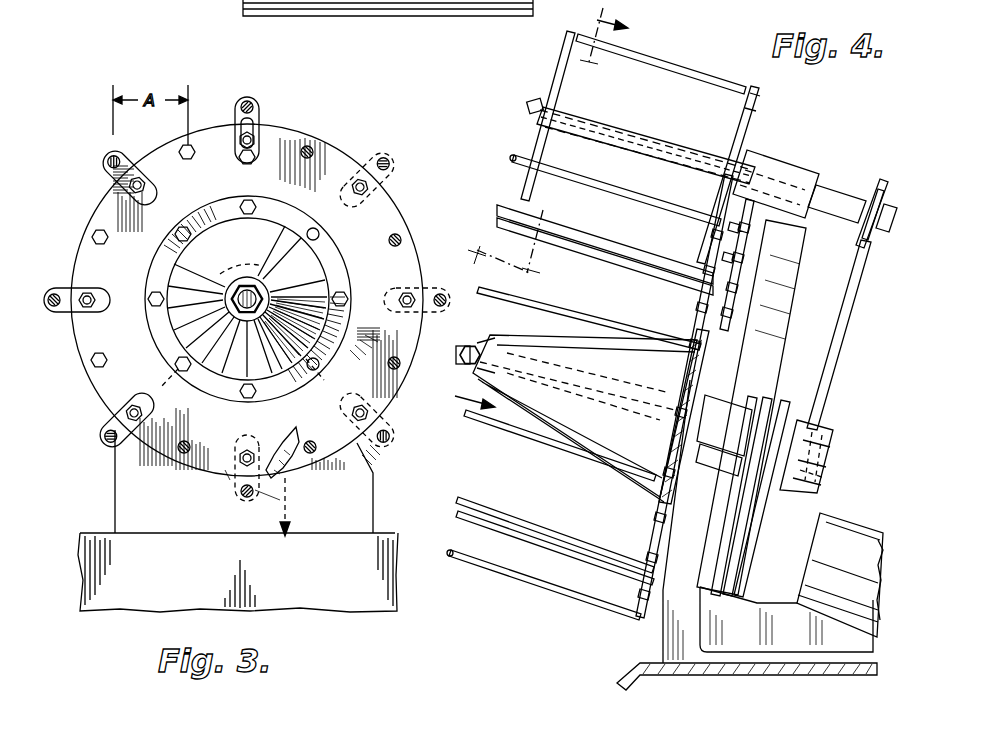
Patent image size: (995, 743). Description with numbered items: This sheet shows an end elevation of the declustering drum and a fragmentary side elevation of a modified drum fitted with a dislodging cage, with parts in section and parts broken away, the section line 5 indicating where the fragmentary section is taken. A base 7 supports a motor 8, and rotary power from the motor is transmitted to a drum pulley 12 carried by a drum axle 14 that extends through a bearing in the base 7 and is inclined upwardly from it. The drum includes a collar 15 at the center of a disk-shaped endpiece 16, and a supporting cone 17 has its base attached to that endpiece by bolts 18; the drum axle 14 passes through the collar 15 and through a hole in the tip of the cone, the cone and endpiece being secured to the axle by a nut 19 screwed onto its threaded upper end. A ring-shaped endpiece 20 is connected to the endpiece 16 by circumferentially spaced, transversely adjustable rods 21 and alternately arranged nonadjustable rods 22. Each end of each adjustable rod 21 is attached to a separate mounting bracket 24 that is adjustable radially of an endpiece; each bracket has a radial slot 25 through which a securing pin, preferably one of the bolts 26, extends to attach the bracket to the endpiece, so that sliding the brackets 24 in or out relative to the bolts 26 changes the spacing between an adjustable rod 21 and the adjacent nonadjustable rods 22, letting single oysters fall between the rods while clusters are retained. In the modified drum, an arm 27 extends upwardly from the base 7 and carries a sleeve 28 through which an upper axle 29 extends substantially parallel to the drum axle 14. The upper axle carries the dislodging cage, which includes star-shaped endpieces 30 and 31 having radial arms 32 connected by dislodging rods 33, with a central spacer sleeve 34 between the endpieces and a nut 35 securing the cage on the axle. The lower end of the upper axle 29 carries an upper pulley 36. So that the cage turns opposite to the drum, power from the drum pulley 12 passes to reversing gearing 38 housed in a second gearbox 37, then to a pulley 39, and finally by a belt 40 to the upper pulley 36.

In FIG. 4, the section line 5- 5 is at (532, 207).
In FIG. 4, the base 7 is at (662, 625).
In FIG. 4, the motor 8 is at (840, 575).
In FIG. 4, the drum pulley 12 is at (780, 405).
In FIG. 3, the drum axle 14 is at (238, 296).
In FIG. 4, the drum axle 14 is at (463, 346).
In FIG. 4, the collar 15 is at (676, 394).
In FIG. 3, the disk-shaped endpiece 16 is at (345, 158).
In FIG. 4, the disk-shaped endpiece 16 is at (705, 305).
In FIG. 3, the supporting cone 17 is at (305, 272).
In FIG. 4, the supporting cone 17 is at (585, 398).
In FIG. 3, the bolts 18 is at (313, 228).
In FIG. 3, the nut 19 is at (246, 288).
In FIG. 4, the nut 19 is at (480, 346).
In FIG. 3, the ring-shaped endpiece 20 is at (100, 215).
In FIG. 3, the adjustable rods 21 is at (260, 90).
In FIG. 4, the adjustable rods 21 is at (650, 196).
In FIG. 3, the nonadjustable rods 22 is at (313, 146).
In FIG. 4, the nonadjustable rods 22 is at (606, 242).
In FIG. 3, the mounting bracket 24 is at (262, 107).
In FIG. 4, the mounting bracket 24 is at (750, 222).
In FIG. 3, the radial slot 25 is at (240, 112).
In FIG. 3, the bolts 26 is at (237, 160).
In FIG. 4, the arm 27 is at (775, 300).
In FIG. 4, the sleeve 28 is at (790, 168).
In FIG. 4, the upper axle 29 is at (888, 224).
In FIG. 4, the star-shaped endpiece 30 is at (642, 157).
In FIG. 4, the star-shaped endpiece 31 is at (566, 52).
In FIG. 4, the radial arms 32 is at (748, 126).
In FIG. 4, the dislodging rods 33 is at (648, 62).
In FIG. 4, the central spacer sleeve 34 is at (654, 136).
In FIG. 4, the nut 35 is at (530, 108).
In FIG. 4, the upper pulley 36 is at (866, 188).
In FIG. 4, the second gearbox 37 is at (832, 434).
In FIG. 4, the reversing gearing 38 is at (830, 456).
In FIG. 4, the pulley 39 is at (835, 482).
In FIG. 4, the belt 40 is at (838, 358).